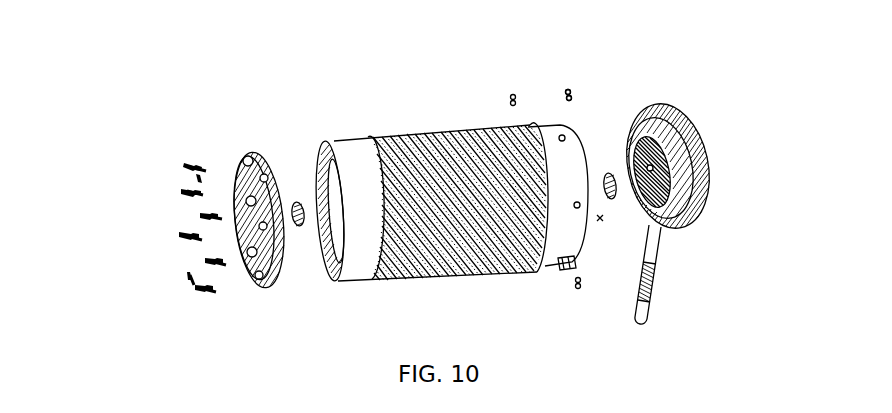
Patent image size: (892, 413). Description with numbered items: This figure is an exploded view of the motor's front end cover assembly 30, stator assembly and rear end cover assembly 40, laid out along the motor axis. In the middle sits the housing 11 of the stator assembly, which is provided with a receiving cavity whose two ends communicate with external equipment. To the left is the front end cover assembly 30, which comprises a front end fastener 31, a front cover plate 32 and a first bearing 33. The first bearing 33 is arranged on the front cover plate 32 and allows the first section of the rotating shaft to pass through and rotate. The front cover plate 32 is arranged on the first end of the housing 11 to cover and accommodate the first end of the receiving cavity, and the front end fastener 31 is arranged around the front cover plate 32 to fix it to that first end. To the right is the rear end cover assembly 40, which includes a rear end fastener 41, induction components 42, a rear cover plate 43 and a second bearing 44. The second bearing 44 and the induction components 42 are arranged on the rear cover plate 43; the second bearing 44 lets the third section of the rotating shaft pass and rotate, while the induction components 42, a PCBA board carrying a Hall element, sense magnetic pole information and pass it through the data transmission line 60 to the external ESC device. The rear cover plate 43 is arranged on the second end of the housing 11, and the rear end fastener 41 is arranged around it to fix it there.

The housing 11 is at (405, 160).
The front end cover assembly 30 is at (108, 86).
The front end fastener 31 is at (205, 217).
The front cover plate 32 is at (241, 160).
The first bearing 33 is at (298, 203).
The rear end cover assembly 40 is at (762, 23).
The rear end fastener 41 is at (577, 98).
The induction components 42 is at (657, 155).
The rear cover plate 43 is at (698, 203).
The second bearing 44 is at (609, 170).
The data transmission line 60 is at (650, 271).